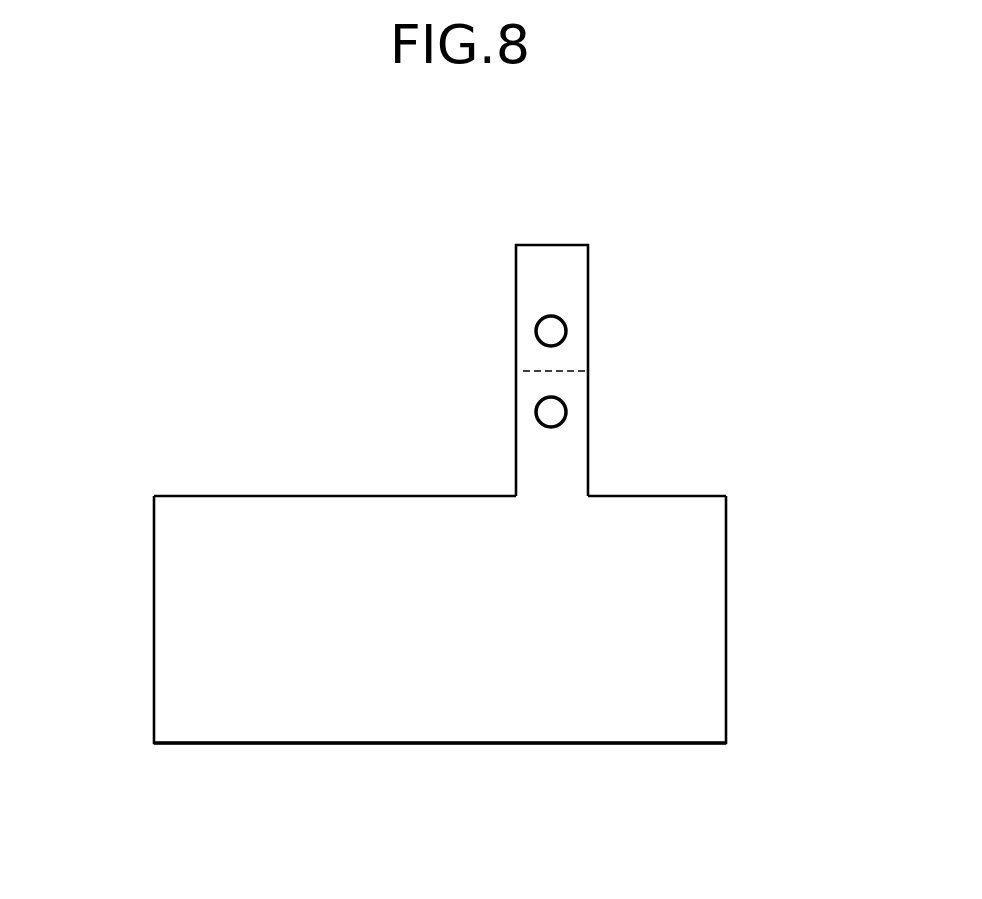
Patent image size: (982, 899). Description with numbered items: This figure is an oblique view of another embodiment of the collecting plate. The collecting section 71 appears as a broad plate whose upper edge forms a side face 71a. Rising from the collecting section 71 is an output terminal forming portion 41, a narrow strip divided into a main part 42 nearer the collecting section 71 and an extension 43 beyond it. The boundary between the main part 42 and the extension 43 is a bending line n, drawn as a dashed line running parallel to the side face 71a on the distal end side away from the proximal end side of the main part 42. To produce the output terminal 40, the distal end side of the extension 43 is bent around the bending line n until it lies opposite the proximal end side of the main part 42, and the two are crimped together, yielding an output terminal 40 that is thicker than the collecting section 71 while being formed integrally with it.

The output terminal 40 is at (439, 494).
The output terminal forming portion 41 is at (519, 370).
The main part 42 is at (570, 442).
The extension 43 is at (570, 298).
The bending line n is at (508, 375).
The collecting section 71 is at (154, 682).
The side face 71a is at (237, 494).